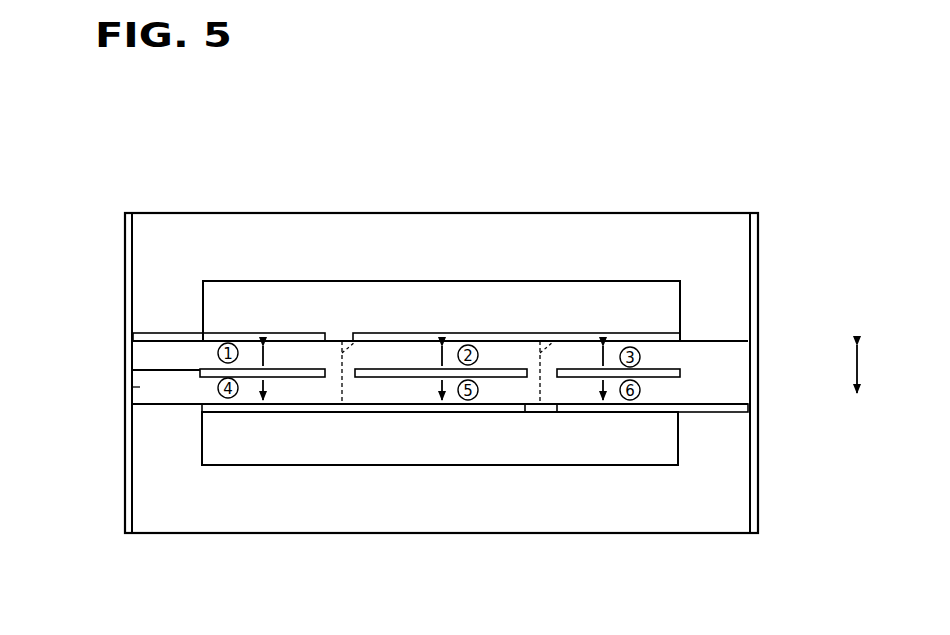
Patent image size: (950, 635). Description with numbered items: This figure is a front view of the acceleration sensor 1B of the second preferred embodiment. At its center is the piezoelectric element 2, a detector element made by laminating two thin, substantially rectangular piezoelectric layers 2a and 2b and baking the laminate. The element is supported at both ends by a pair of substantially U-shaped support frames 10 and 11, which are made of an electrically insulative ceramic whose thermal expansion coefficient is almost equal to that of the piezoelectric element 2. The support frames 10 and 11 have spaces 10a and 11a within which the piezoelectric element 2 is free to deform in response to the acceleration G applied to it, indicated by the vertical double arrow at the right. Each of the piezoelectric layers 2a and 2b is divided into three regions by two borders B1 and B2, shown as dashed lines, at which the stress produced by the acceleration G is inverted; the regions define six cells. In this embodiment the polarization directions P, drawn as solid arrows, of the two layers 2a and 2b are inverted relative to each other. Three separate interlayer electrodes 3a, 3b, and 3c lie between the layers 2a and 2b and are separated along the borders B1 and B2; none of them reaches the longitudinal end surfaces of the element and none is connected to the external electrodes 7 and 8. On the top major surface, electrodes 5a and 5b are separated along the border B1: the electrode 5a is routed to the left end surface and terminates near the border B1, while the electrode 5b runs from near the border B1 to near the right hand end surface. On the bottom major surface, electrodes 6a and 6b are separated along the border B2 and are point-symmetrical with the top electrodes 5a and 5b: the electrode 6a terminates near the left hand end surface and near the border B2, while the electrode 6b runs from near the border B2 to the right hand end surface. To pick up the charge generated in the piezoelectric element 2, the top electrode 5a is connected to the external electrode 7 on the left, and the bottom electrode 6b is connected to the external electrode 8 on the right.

The acceleration sensor 1B is at (676, 174).
The piezoelectric element 2 is at (44, 332).
The piezoelectric layer 2a is at (140, 349).
The piezoelectric layer 2b is at (140, 387).
The interlayer electrode 3a is at (287, 366).
The interlayer electrode 3b is at (398, 366).
The interlayer electrode 3c is at (655, 367).
The top major surface electrode 5a is at (158, 330).
The top major surface electrode 5b is at (507, 333).
The bottom major surface electrode 6a is at (240, 413).
The bottom major surface electrode 6b is at (705, 414).
The external electrode 7 is at (126, 243).
The external electrode 8 is at (760, 258).
The support frame 10 is at (451, 230).
The space 10a is at (345, 281).
The support frame 11 is at (443, 518).
The space 11a is at (313, 463).
The border B1 is at (344, 339).
The border B2 is at (542, 339).
The polarization direction P is at (258, 353).
The acceleration G is at (877, 369).